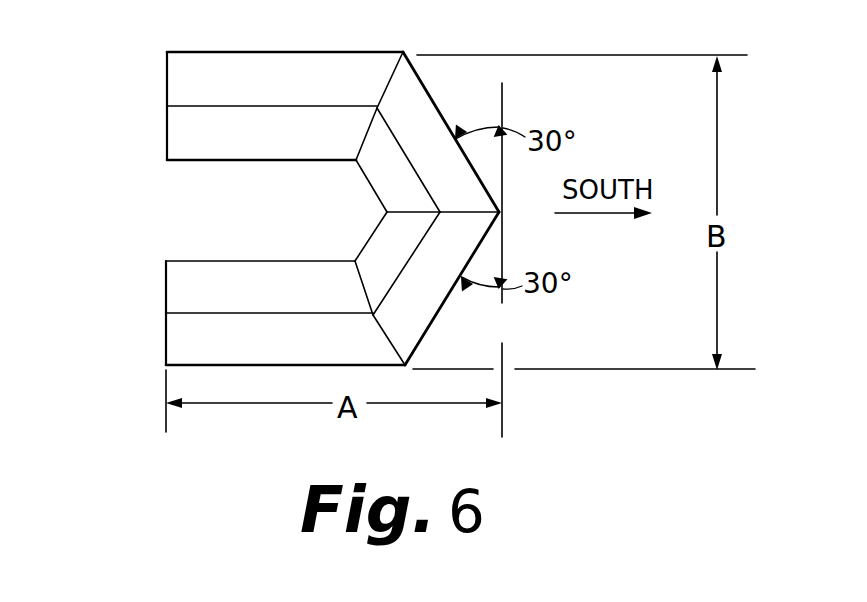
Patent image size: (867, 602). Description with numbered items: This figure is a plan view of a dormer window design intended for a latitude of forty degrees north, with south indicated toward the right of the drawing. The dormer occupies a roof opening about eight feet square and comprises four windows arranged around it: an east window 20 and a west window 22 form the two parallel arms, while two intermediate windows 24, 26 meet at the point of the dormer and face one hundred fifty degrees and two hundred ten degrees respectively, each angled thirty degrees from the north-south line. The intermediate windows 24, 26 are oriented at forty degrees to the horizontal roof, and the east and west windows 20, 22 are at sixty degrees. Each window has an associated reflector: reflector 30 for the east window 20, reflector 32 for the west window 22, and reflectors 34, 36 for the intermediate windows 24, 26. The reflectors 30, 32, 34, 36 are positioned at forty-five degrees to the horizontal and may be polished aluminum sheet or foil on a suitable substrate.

The east window 20 is at (192, 76).
The reflector 30 is at (188, 131).
The reflector 32 is at (192, 282).
The west window 22 is at (192, 338).
The intermediate window 24 is at (429, 116).
The intermediate window 26 is at (440, 295).
The reflector 34 is at (392, 165).
The reflector 36 is at (392, 233).